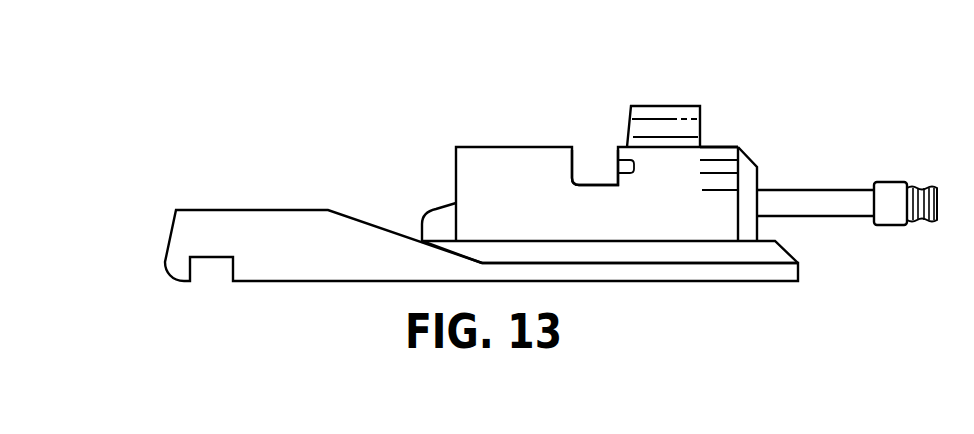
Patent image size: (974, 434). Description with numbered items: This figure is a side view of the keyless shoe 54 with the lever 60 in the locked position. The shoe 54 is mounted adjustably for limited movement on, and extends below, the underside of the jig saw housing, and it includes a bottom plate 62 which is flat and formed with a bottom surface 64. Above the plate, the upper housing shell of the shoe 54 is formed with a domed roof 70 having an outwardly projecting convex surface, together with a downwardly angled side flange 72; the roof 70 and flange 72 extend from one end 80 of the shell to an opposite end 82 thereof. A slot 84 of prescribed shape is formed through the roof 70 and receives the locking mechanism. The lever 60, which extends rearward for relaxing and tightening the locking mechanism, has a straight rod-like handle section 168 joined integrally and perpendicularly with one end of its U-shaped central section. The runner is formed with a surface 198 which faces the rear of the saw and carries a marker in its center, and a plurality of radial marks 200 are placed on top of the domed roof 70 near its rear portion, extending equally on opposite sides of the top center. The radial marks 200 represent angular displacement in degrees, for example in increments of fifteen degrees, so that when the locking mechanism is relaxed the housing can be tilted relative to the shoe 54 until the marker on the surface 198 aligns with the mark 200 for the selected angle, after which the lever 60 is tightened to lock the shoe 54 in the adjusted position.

The keyless shoe 54 is at (421, 127).
The lever 60 is at (833, 227).
The bottom plate 62 is at (728, 290).
The bottom surface 64 is at (652, 280).
The domed roof 70 is at (502, 167).
The side flange 72 is at (588, 253).
The one end 80 is at (758, 180).
The opposite end 82 is at (452, 182).
The slot 84 is at (595, 146).
The handle section 168 is at (833, 200).
The surface 198 is at (700, 132).
The radial marks 200 is at (708, 192).